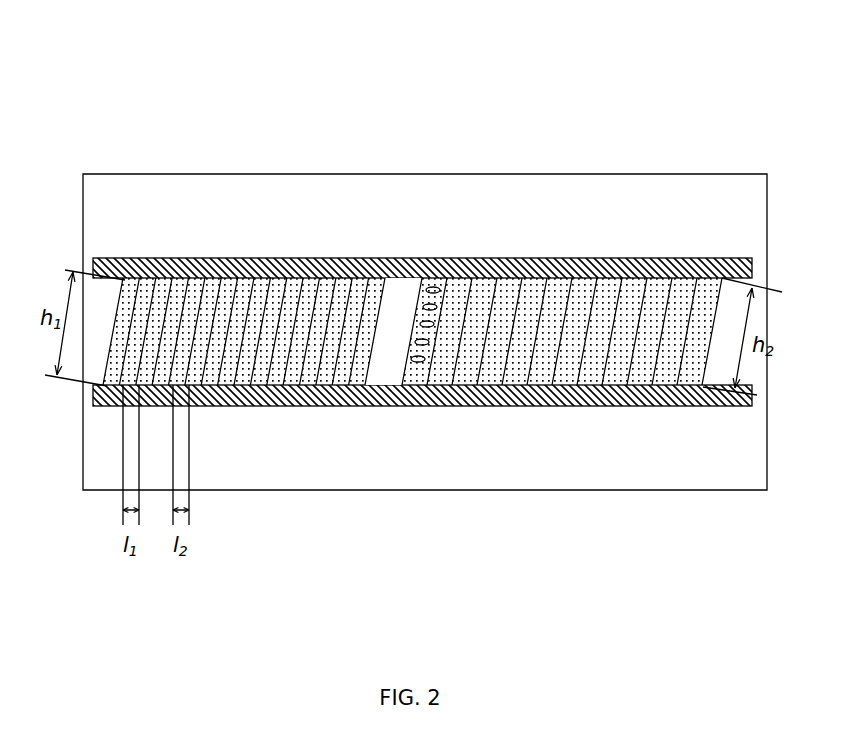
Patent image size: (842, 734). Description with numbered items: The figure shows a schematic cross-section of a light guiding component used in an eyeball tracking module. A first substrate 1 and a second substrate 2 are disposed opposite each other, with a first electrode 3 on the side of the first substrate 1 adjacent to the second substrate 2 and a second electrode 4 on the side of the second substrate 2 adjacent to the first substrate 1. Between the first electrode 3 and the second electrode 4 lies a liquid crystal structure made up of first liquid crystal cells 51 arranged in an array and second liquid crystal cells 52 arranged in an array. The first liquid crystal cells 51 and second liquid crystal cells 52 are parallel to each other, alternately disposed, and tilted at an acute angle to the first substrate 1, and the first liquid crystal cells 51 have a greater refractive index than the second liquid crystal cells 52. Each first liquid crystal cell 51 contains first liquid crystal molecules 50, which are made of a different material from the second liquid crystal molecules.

The first substrate 1 is at (646, 437).
The second substrate 2 is at (528, 232).
The first electrode 3 is at (510, 392).
The second electrode 4 is at (393, 273).
The first liquid crystal molecule 50 is at (422, 345).
The first liquid crystal cells 51 is at (220, 332).
The second liquid crystal cells 52 is at (300, 332).